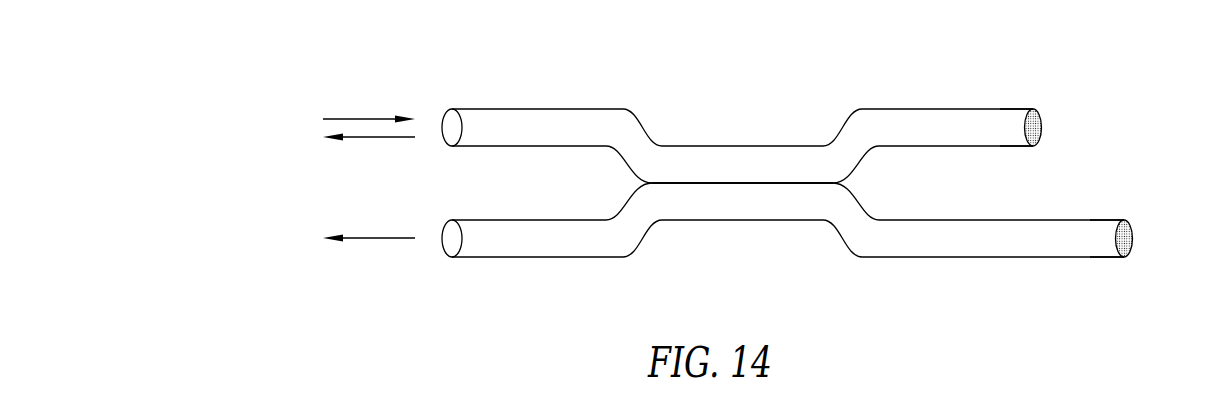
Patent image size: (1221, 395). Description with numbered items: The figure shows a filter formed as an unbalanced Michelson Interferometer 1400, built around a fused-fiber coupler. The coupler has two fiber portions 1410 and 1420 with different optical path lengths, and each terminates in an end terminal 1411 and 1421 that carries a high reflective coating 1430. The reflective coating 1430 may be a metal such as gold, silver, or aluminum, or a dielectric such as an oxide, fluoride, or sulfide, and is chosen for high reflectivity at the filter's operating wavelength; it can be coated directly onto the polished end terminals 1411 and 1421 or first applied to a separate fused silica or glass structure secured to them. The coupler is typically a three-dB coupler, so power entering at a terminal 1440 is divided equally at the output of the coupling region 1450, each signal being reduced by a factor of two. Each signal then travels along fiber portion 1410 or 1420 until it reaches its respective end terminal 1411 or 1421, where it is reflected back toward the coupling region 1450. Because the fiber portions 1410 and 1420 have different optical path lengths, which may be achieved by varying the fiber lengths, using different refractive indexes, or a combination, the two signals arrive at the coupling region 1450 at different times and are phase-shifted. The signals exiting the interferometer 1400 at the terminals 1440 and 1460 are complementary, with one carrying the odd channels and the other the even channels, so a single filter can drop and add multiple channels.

The unbalanced Michelson Interferometer 1400 is at (760, 176).
The fiber portion 1410 is at (918, 116).
The end terminal 1411 is at (1032, 108).
The fiber portion 1420 is at (927, 225).
The end terminal 1421 is at (1123, 258).
The high reflective coating 1430 is at (1038, 128).
The terminal 1440 is at (447, 117).
The coupling region 1450 is at (776, 92).
The terminal 1460 is at (447, 248).